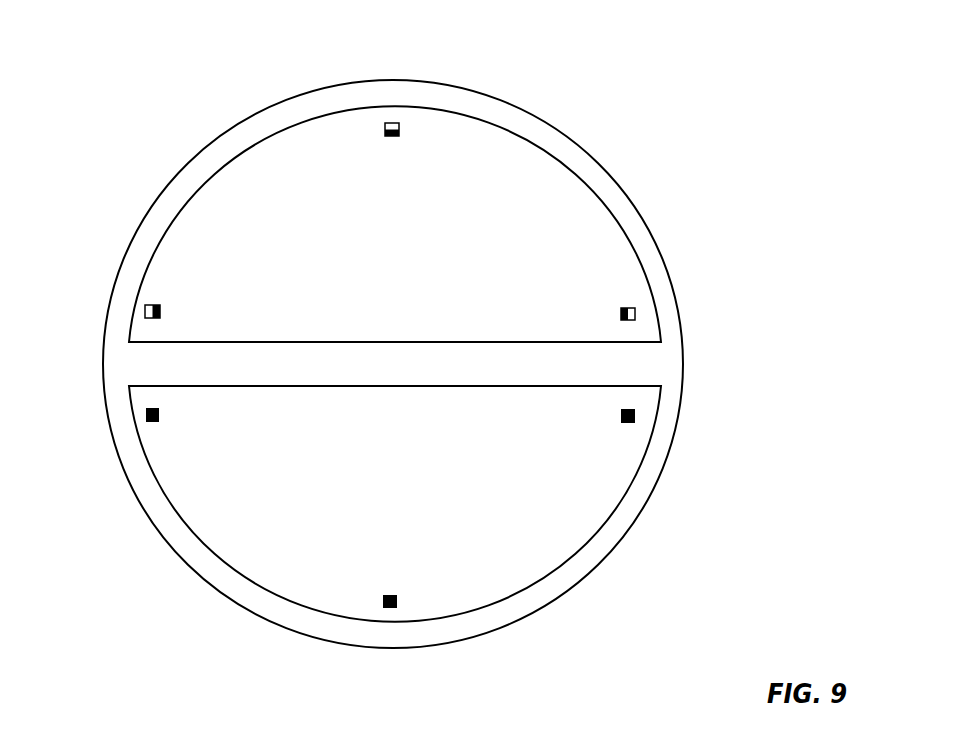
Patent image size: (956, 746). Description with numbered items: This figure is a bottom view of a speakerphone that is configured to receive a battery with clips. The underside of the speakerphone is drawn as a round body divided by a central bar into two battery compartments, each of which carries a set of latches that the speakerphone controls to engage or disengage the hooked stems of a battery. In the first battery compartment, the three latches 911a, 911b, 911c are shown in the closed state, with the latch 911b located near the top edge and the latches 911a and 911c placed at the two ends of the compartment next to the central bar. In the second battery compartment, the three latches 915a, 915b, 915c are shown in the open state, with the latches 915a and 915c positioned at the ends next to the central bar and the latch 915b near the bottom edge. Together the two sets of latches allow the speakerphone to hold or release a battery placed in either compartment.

The latch 911a is at (634, 308).
The latch 911b is at (397, 124).
The latch 911c is at (145, 305).
The latch 915a is at (635, 422).
The latch 915b is at (398, 601).
The latch 915c is at (147, 421).